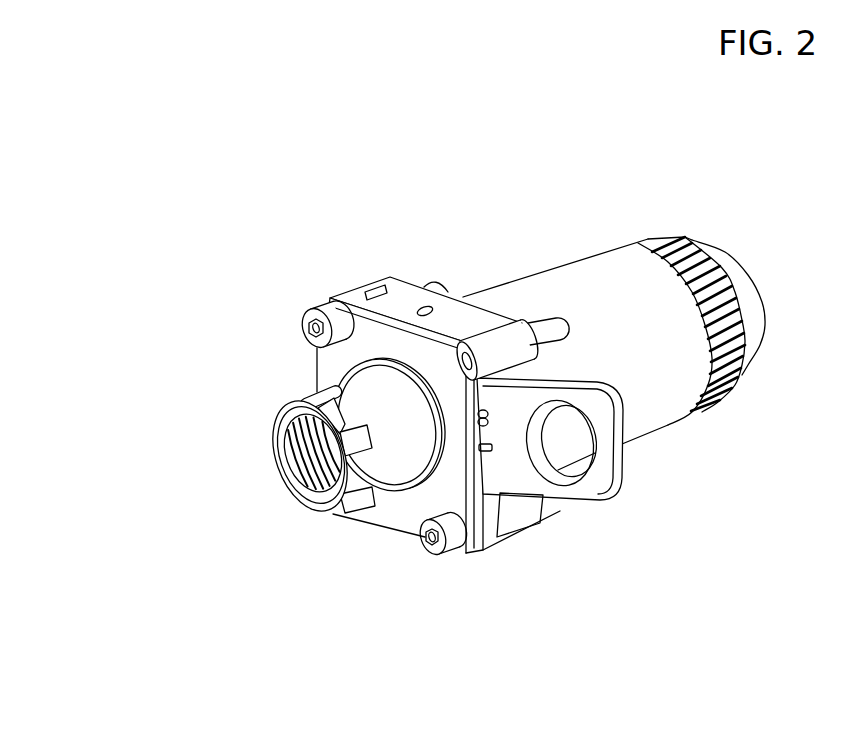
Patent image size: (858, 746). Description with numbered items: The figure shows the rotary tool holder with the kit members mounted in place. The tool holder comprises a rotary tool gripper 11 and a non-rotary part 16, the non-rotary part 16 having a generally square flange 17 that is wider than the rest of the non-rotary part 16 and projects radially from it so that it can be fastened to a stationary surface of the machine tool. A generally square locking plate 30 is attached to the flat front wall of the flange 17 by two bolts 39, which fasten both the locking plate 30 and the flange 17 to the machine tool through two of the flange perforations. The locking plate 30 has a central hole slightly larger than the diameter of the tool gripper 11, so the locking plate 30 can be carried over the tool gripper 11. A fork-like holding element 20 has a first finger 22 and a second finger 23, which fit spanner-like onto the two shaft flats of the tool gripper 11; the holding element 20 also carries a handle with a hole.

The rotary tool gripper 11 is at (273, 437).
The non-rotary part 16 is at (588, 288).
The flange 17 is at (410, 297).
The holding element 20 is at (513, 450).
The first finger 22 is at (418, 482).
The second finger 23 is at (340, 363).
The locking plate 30 is at (347, 360).
The bolts 39 is at (303, 318).